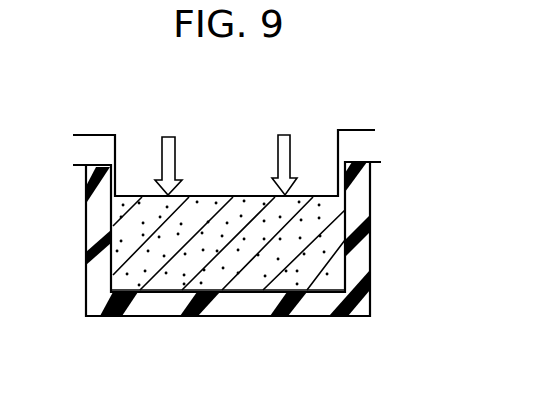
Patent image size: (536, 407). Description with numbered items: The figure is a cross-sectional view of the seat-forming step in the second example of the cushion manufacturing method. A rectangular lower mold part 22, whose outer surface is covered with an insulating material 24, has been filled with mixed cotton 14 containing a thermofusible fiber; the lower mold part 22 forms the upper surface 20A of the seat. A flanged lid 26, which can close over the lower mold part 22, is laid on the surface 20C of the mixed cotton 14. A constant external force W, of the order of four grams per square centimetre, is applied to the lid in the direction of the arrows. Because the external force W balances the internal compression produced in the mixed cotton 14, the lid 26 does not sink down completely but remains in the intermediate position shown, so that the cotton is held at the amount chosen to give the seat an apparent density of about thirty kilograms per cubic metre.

The mixed cotton 14 is at (328, 218).
The upper surface 20A is at (237, 290).
The surface 20C is at (145, 197).
The lower mold part 22 is at (320, 290).
The insulating material 24 is at (360, 265).
The flanged lid 26 is at (320, 196).
The external force W is at (275, 160).